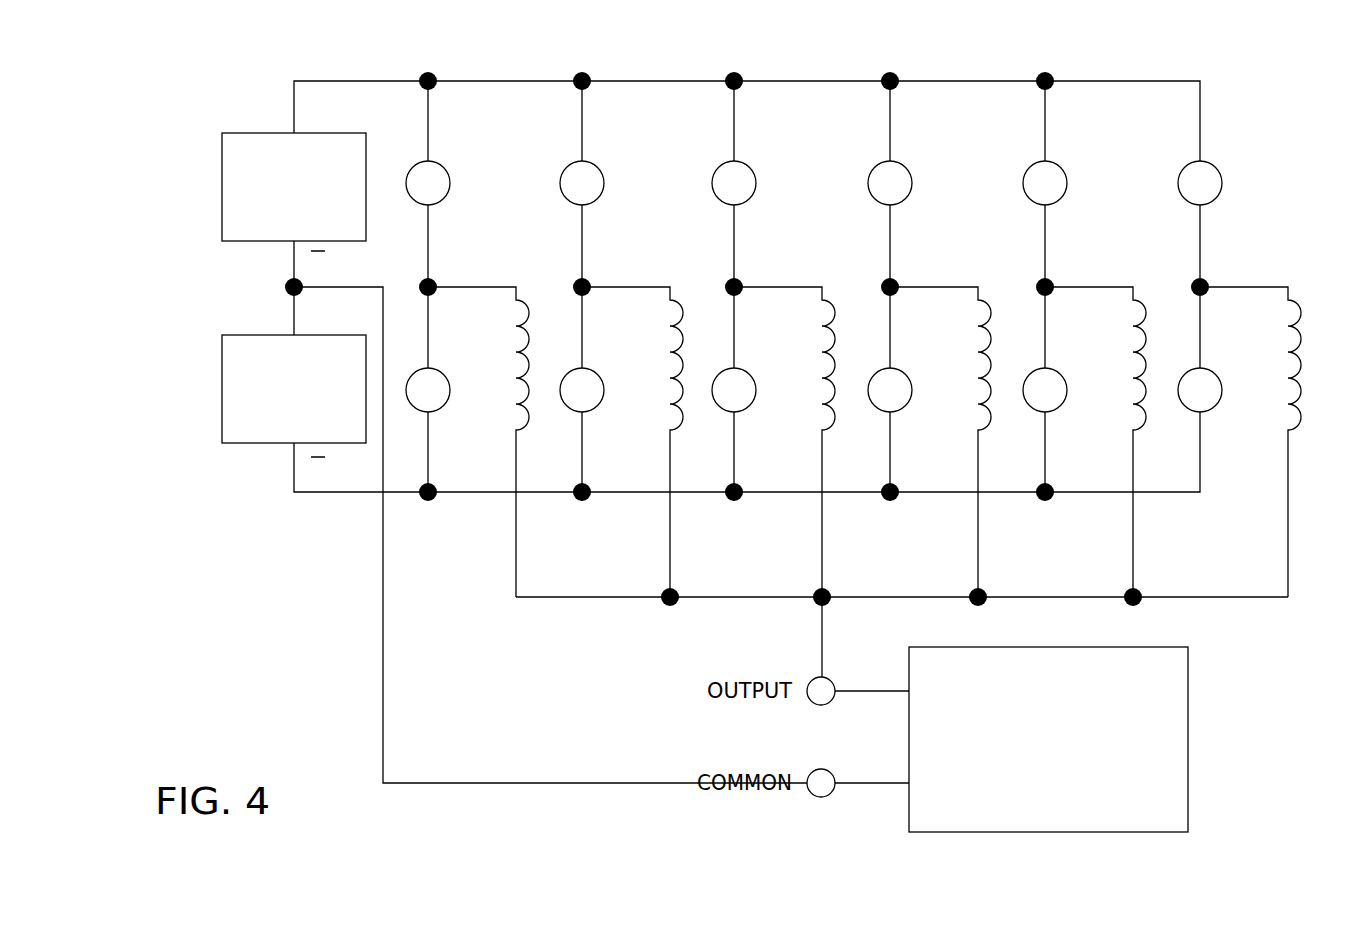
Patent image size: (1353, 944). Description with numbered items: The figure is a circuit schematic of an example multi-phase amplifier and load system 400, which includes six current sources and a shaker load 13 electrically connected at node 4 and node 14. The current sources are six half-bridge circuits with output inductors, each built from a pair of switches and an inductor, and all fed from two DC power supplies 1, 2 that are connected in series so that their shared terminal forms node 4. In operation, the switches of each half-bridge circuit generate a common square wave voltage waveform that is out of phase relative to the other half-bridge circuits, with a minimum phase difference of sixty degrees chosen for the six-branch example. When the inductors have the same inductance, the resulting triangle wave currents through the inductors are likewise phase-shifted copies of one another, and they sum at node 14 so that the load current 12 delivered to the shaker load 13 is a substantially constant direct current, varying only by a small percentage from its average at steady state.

The multi-phase amplifier and load system 400 is at (178, 113).
The DC power supply 1 is at (281, 187).
The DC power supply 2 is at (281, 389).
The node 4 is at (535, 529).
The load current 12 is at (831, 618).
The shaker load 13 is at (1189, 740).
The node 14 is at (814, 606).